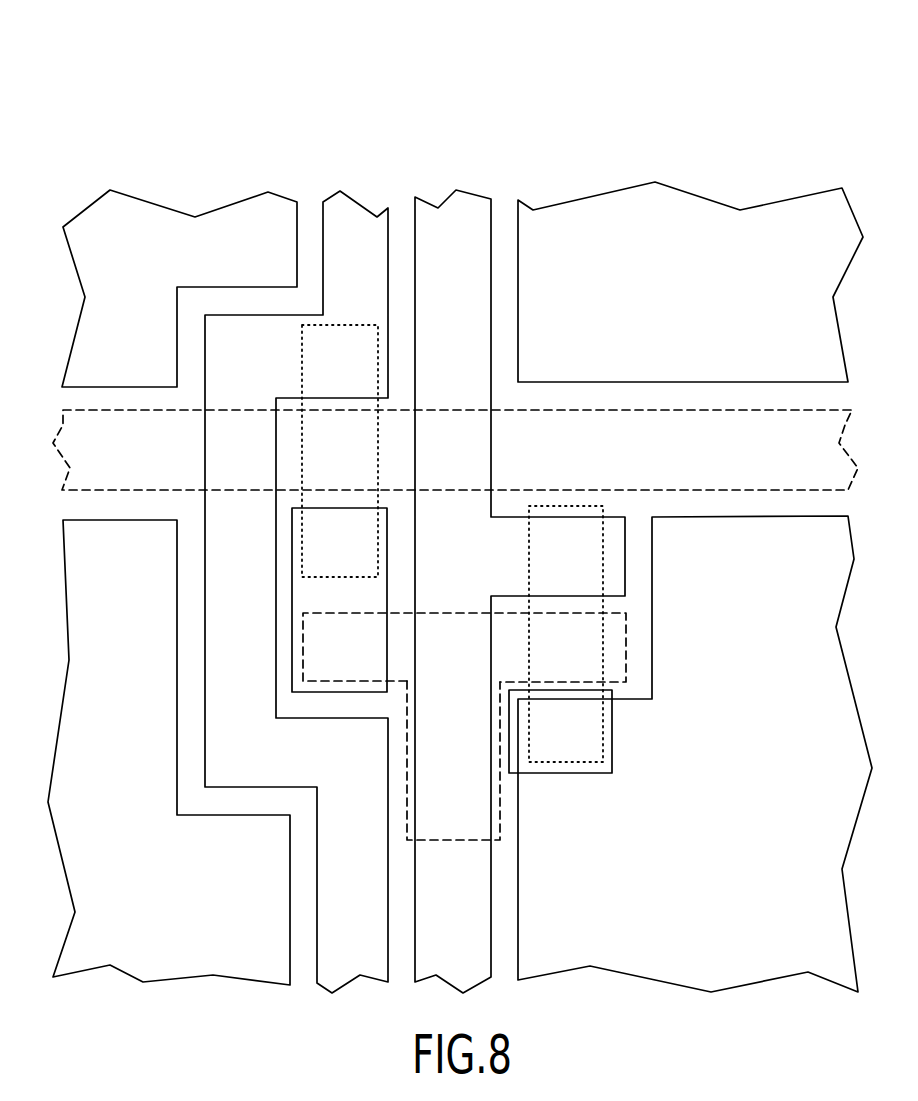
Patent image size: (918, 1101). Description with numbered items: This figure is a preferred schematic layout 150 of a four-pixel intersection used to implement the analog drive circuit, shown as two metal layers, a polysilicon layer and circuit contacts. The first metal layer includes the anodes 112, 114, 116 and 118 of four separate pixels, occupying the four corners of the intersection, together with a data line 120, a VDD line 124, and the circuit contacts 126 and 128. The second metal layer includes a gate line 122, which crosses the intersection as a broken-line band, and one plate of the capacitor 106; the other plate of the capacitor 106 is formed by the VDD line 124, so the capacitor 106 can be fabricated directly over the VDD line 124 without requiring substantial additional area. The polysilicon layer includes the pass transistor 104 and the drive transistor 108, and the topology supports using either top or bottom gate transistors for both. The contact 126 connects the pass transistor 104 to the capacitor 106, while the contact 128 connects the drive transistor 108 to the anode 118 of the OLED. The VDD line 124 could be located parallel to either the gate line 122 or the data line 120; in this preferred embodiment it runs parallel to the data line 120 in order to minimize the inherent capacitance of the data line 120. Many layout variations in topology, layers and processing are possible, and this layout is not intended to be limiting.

The memory cell layout 150 is at (497, 152).
The anode 112 is at (115, 275).
The anode 114 is at (655, 300).
The anode 116 is at (148, 895).
The anode 118 is at (679, 875).
The data line 120 is at (333, 269).
The gate line 122 is at (656, 465).
The VDD line 124 is at (432, 279).
The pass transistor 104 is at (333, 498).
The capacitor 106 is at (403, 660).
The drive transistor 108 is at (587, 602).
The contact 126 is at (322, 608).
The contact 128 is at (546, 742).